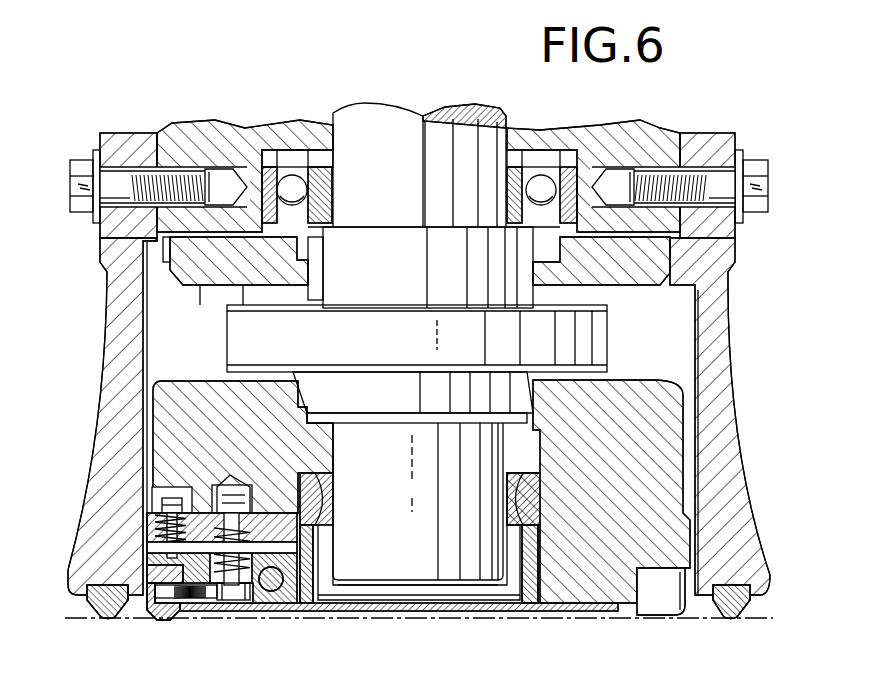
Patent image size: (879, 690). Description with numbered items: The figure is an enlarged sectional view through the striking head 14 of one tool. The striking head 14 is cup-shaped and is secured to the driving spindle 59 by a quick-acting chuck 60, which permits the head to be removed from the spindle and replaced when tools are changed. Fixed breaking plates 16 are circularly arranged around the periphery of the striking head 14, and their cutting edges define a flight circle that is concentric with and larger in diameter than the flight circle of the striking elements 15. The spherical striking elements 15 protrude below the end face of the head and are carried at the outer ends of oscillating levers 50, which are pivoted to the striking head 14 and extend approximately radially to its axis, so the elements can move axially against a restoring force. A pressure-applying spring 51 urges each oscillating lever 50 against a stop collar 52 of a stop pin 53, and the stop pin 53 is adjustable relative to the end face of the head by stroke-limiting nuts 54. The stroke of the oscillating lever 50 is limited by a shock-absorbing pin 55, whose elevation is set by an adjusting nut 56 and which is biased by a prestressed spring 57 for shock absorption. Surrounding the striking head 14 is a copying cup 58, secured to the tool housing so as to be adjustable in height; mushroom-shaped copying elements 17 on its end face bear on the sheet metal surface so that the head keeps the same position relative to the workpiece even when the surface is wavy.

The striking head 14 is at (640, 415).
The striking elements 15 is at (165, 606).
The breaking plates 16 is at (655, 598).
The copying elements 17 is at (103, 607).
The oscillating lever 50 is at (200, 600).
The pressure-applying spring 51 is at (280, 592).
The stop collar 52 is at (240, 603).
The stop pin 53 is at (220, 552).
The stroke-limiting nuts 54 is at (233, 500).
The shock-absorbing pin 55 is at (155, 522).
The adjusting nut 56 is at (167, 507).
The prestressed spring 57 is at (160, 540).
The copying cup 58 is at (720, 422).
The driving spindle 59 is at (372, 130).
The quick-acting chuck 60 is at (511, 522).